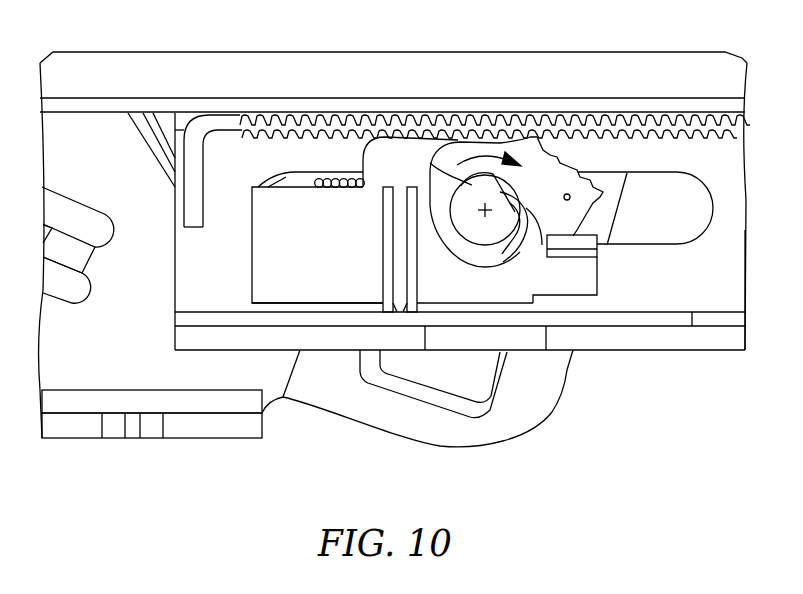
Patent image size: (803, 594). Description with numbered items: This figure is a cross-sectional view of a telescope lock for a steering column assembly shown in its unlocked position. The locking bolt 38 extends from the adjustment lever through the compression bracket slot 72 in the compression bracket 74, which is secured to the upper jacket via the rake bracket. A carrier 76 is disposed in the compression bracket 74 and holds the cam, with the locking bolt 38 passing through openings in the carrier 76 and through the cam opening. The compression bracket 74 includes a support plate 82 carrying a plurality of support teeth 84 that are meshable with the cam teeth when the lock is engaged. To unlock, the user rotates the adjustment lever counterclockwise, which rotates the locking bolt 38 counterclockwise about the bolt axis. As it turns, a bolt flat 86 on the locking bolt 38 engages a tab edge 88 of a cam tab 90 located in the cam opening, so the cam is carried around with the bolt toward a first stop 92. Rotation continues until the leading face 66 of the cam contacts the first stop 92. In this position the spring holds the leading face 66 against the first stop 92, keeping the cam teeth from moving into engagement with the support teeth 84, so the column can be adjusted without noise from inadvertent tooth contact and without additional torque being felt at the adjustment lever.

The locking bolt 38 is at (470, 225).
The leading face 66 is at (558, 232).
The compression bracket slot 72 is at (690, 225).
The compression bracket 74 is at (727, 185).
The carrier 76 is at (268, 272).
The support plate 82 is at (216, 125).
The support teeth 84 is at (552, 133).
The bolt flat 86 is at (512, 240).
The tab edge 88 is at (430, 165).
The cam tab 90 is at (545, 250).
The first stop 92 is at (573, 240).